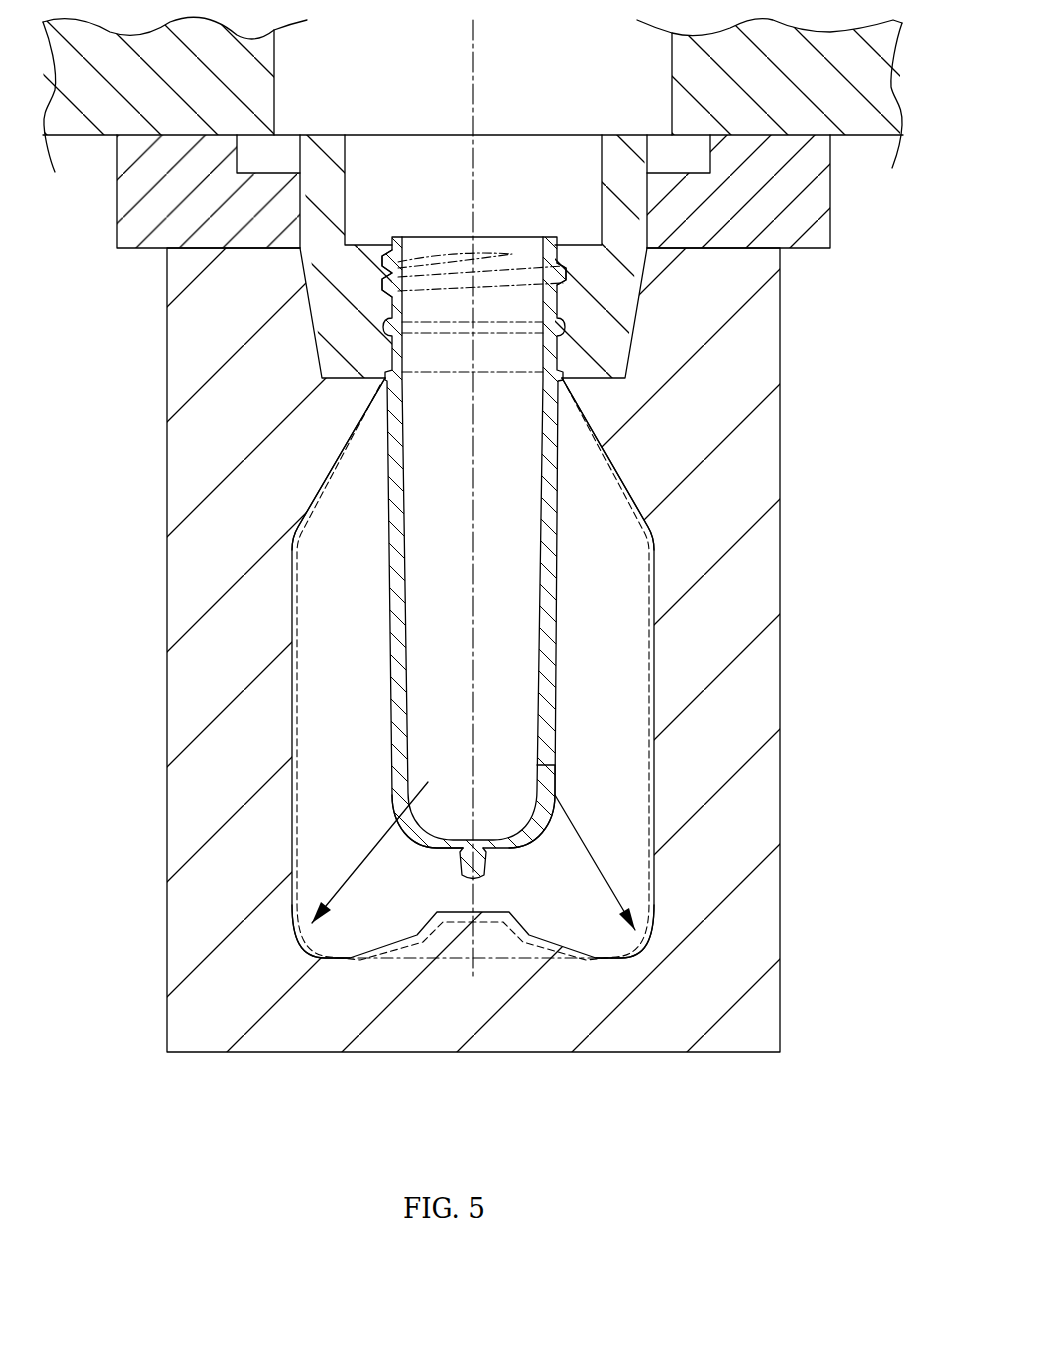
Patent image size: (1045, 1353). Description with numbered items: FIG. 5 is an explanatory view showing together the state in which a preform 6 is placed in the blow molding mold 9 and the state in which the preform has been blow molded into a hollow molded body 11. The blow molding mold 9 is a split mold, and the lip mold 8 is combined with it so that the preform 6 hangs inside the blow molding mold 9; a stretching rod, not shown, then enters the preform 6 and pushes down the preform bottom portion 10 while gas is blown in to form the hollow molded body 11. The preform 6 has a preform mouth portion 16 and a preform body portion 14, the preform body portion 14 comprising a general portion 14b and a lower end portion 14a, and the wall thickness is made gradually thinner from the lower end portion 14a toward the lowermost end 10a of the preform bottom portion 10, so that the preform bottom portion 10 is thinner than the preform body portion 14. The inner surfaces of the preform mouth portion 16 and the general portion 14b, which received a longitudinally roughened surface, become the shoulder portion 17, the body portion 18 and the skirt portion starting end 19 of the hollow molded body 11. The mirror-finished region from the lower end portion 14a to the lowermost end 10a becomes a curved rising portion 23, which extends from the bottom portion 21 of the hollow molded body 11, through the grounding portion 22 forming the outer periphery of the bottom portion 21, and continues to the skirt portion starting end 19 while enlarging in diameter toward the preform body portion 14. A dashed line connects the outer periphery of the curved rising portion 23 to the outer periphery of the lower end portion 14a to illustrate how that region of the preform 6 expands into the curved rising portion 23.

The preform 6 is at (390, 655).
The lip mold 8 is at (293, 160).
The blow molding mold 9 is at (165, 357).
The preform bottom portion 10 is at (413, 838).
The lowermost end 10a is at (450, 850).
The hollow molded body 11 is at (622, 477).
The preform body portion 14 is at (558, 558).
The lower end portion 14a is at (556, 777).
The general portion 14b is at (556, 688).
The preform mouth portion 16 is at (387, 312).
The shoulder portion 17 is at (347, 453).
The body portion 18 is at (297, 690).
The skirt portion starting end 19 is at (300, 927).
The bottom portion 21 is at (548, 937).
The grounding portion 22 is at (603, 960).
The curved rising portion 23 is at (650, 925).